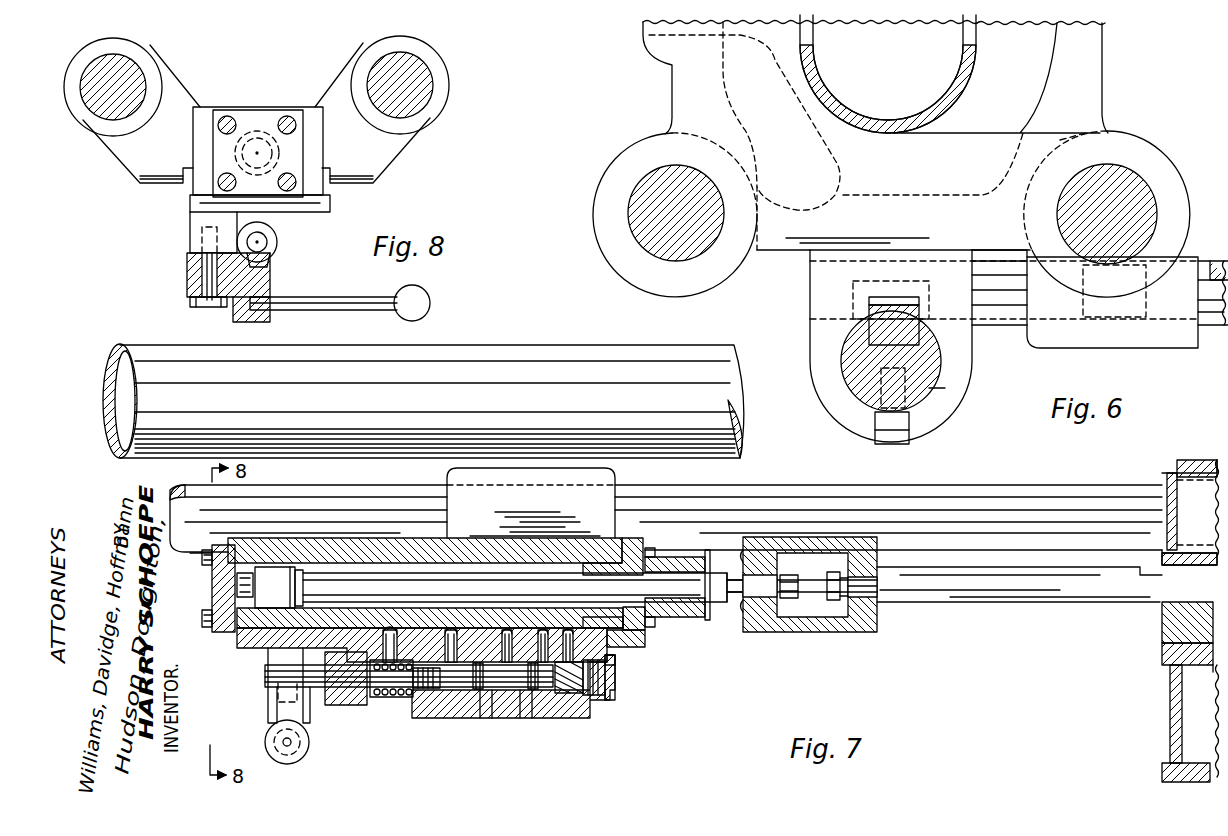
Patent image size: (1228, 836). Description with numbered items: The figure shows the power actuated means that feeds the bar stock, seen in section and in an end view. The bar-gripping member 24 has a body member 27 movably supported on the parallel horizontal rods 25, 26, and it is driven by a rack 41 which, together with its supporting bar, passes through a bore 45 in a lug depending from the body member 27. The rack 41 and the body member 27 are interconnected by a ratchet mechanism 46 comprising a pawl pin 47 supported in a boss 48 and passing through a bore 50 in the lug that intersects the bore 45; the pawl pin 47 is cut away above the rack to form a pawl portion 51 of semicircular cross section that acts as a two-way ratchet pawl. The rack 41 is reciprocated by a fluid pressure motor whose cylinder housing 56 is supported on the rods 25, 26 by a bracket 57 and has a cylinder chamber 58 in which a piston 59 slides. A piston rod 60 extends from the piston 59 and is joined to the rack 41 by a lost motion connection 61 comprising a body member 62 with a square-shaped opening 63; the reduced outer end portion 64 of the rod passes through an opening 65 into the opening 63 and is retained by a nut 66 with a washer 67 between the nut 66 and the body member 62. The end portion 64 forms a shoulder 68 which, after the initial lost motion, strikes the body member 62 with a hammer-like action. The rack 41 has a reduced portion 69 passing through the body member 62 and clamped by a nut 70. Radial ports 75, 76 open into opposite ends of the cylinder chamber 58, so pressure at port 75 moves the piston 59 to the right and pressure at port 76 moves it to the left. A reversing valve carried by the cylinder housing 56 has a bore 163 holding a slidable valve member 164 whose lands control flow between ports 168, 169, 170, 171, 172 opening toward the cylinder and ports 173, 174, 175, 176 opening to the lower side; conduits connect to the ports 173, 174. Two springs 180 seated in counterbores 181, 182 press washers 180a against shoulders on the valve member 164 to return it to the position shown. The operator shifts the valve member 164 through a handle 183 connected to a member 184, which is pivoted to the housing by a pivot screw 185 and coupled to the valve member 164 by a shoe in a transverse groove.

In FIG. 6, the bar-gripping member 24 is at (670, 67).
In FIG. 6, the support rod 25 is at (639, 246).
In FIG. 6, the support rod 26 is at (1142, 186).
In FIG. 7, the support rod 26 is at (986, 490).
In FIG. 6, the body member 27 is at (699, 97).
In FIG. 6, the rack 41 is at (869, 317).
In FIG. 7, the rack 41 is at (1008, 596).
In FIG. 6, the bore 45 is at (929, 388).
In FIG. 6, the ratchet mechanism 46 is at (921, 313).
In FIG. 6, the pawl pin 47 is at (1218, 327).
In FIG. 6, the boss 48 is at (1095, 341).
In FIG. 6, the bore 50 is at (948, 270).
In FIG. 6, the pawl portion 51 is at (853, 298).
In FIG. 7, the cylinder housing 56 is at (381, 548).
In FIG. 7, the bracket 57 is at (600, 497).
In FIG. 7, the cylinder chamber 58 is at (318, 566).
In FIG. 7, the piston 59 is at (265, 570).
In FIG. 7, the piston rod 60 is at (667, 580).
In FIG. 7, the lost motion connection 61 is at (850, 636).
In FIG. 7, the body member 62 is at (800, 632).
In FIG. 7, the square-shaped opening 63 is at (800, 553).
In FIG. 7, the outer end portion 64 is at (735, 578).
In FIG. 7, the opening 65 is at (780, 560).
In FIG. 7, the nut 66 is at (795, 598).
In FIG. 7, the washer 67 is at (797, 582).
In FIG. 7, the shoulder 68 is at (727, 600).
In FIG. 7, the reduced portion 69 is at (868, 578).
In FIG. 7, the nut 70 is at (843, 572).
In FIG. 7, the radial port 75 is at (275, 587).
In FIG. 7, the radial port 76 is at (598, 637).
In FIG. 7, the bore 163 is at (450, 720).
In FIG. 8, the slidable valve member 164 is at (262, 241).
In FIG. 7, the slidable valve member 164 is at (315, 682).
In FIG. 7, the port 168 is at (390, 637).
In FIG. 7, the port 169 is at (452, 637).
In FIG. 7, the port 170 is at (507, 637).
In FIG. 7, the port 171 is at (543, 637).
In FIG. 7, the port 172 is at (568, 637).
In FIG. 7, the port 173 is at (417, 705).
In FIG. 7, the port 174 is at (483, 718).
In FIG. 7, the port 175 is at (530, 718).
In FIG. 7, the port 176 is at (567, 720).
In FIG. 7, the spring 180 is at (300, 664).
In FIG. 7, the washer 180a is at (553, 700).
In FIG. 7, the counterbore 181 is at (387, 700).
In FIG. 7, the counterbore 182 is at (612, 658).
In FIG. 8, the handle 183 is at (360, 277).
In FIG. 8, the member 184 is at (270, 282).
In FIG. 8, the pivot screw 185 is at (205, 282).